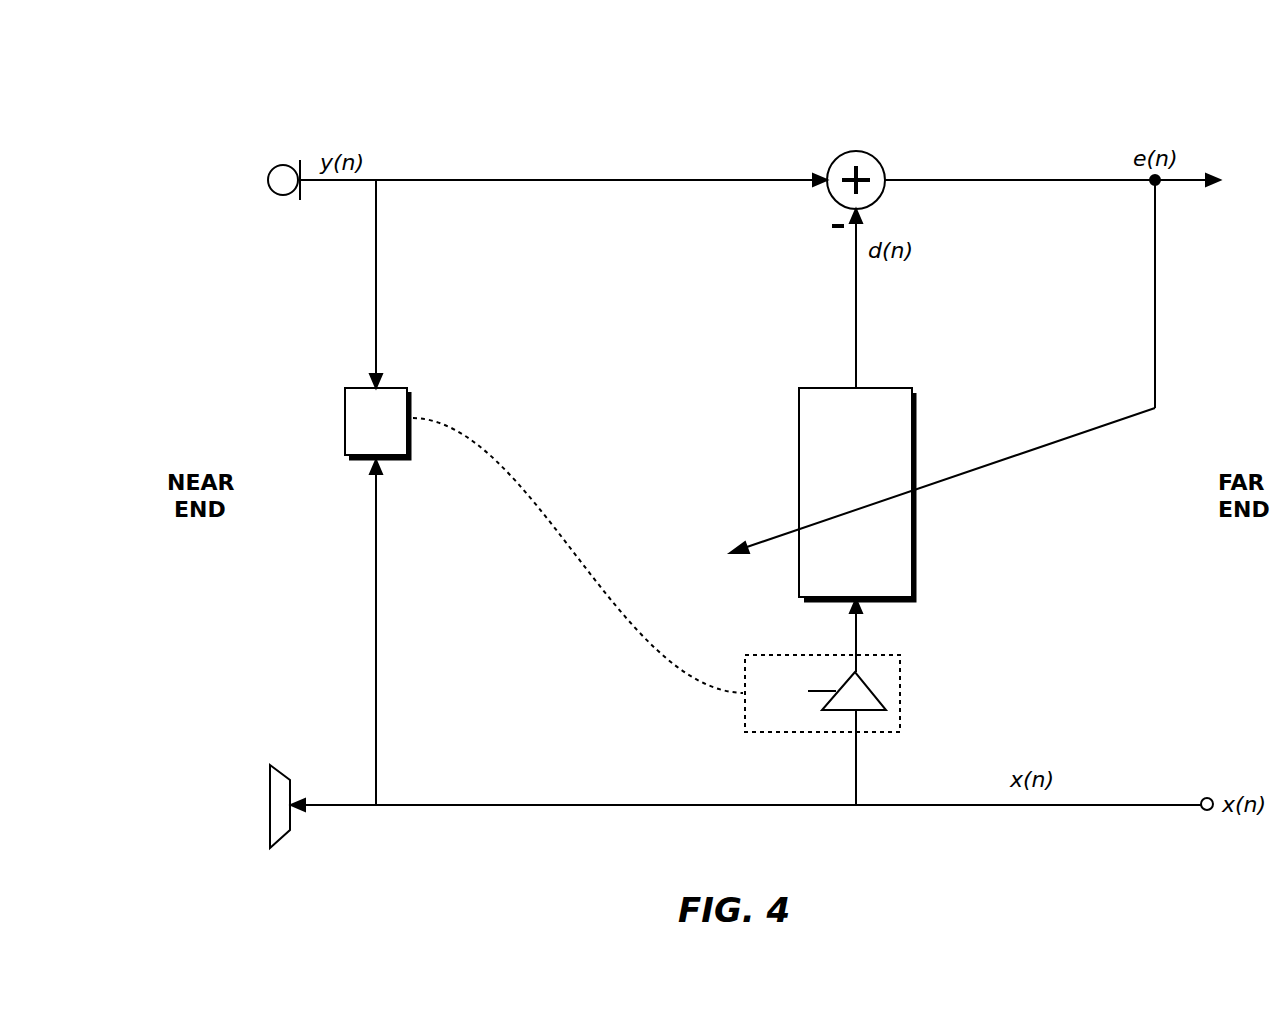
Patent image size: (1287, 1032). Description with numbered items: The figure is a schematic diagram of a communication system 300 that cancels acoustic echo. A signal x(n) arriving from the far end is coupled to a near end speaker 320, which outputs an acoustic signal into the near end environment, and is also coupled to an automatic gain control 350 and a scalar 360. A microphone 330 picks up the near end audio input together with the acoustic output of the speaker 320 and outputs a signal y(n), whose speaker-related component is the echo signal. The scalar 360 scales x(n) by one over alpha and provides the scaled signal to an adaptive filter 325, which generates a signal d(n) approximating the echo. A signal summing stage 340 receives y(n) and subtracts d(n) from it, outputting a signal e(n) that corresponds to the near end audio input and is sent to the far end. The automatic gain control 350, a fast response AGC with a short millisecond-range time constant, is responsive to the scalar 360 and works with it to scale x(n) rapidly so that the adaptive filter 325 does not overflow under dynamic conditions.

The communication system 300 is at (1170, 56).
The speaker 320 is at (282, 838).
The adaptive filter 325 is at (916, 545).
The microphone 330 is at (283, 166).
The signal summing stage 340 is at (856, 150).
The automatic gain control 350 is at (395, 460).
The scalar 360 is at (872, 694).